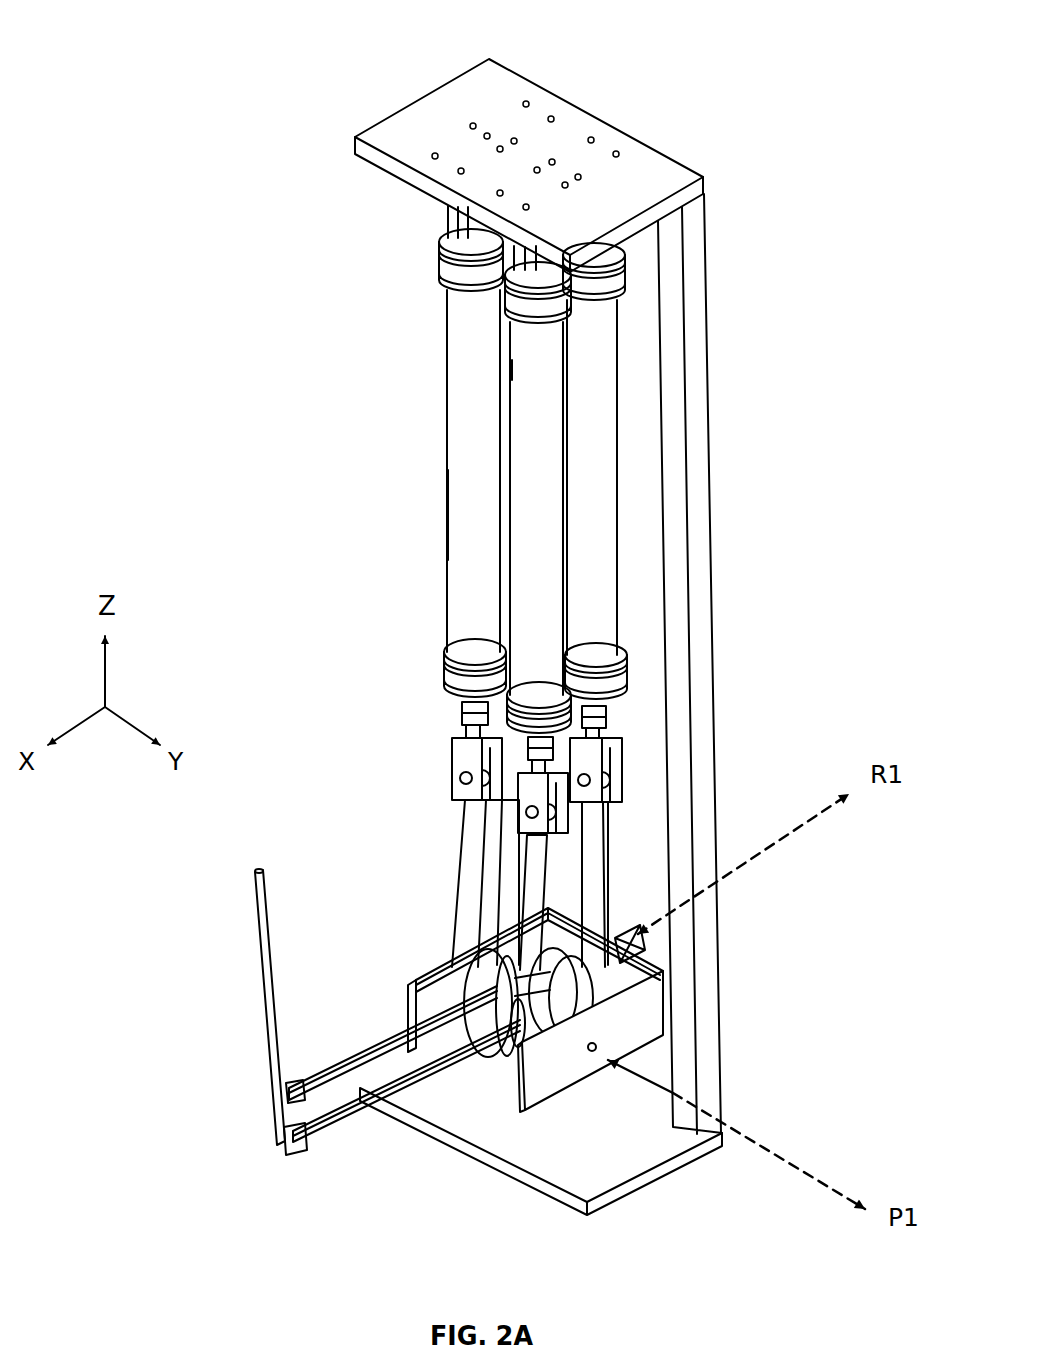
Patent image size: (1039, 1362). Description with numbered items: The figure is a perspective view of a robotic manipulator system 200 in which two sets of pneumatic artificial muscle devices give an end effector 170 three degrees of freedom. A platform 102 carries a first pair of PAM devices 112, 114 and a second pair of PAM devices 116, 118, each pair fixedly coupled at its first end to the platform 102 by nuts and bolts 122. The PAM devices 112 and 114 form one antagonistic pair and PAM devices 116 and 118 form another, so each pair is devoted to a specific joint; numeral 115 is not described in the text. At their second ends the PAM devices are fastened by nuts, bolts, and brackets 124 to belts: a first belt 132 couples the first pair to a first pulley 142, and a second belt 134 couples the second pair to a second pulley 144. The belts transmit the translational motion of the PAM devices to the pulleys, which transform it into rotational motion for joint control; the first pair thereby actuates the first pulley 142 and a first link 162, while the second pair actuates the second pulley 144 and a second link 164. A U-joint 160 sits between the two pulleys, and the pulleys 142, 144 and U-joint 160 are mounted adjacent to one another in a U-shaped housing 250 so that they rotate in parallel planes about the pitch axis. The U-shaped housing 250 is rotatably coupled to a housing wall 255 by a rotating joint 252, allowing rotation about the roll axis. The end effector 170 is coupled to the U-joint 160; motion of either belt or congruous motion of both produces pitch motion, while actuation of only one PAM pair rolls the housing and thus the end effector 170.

The robotic manipulator system 200 is at (383, 76).
The platform 102 is at (663, 172).
The housing wall 255 is at (650, 605).
The nuts and bolts 122 is at (447, 222).
The PAM device 112 is at (502, 385).
The PAM device 114 is at (468, 418).
The cylinder body 115 is at (468, 508).
The PAM device 116 is at (535, 373).
The PAM device 118 is at (592, 307).
The nuts, bolts, and brackets 124 is at (458, 752).
The first belt 132 is at (468, 845).
The second belt 134 is at (603, 862).
The first pulley 142 is at (490, 968).
The second pulley 144 is at (592, 992).
The U-shaped housing 250 is at (597, 1051).
The rotating joint 252 is at (627, 947).
The U-joint 160 is at (443, 1075).
The first link 162 is at (338, 1063).
The second link 164 is at (338, 1123).
The end effector 170 is at (239, 998).